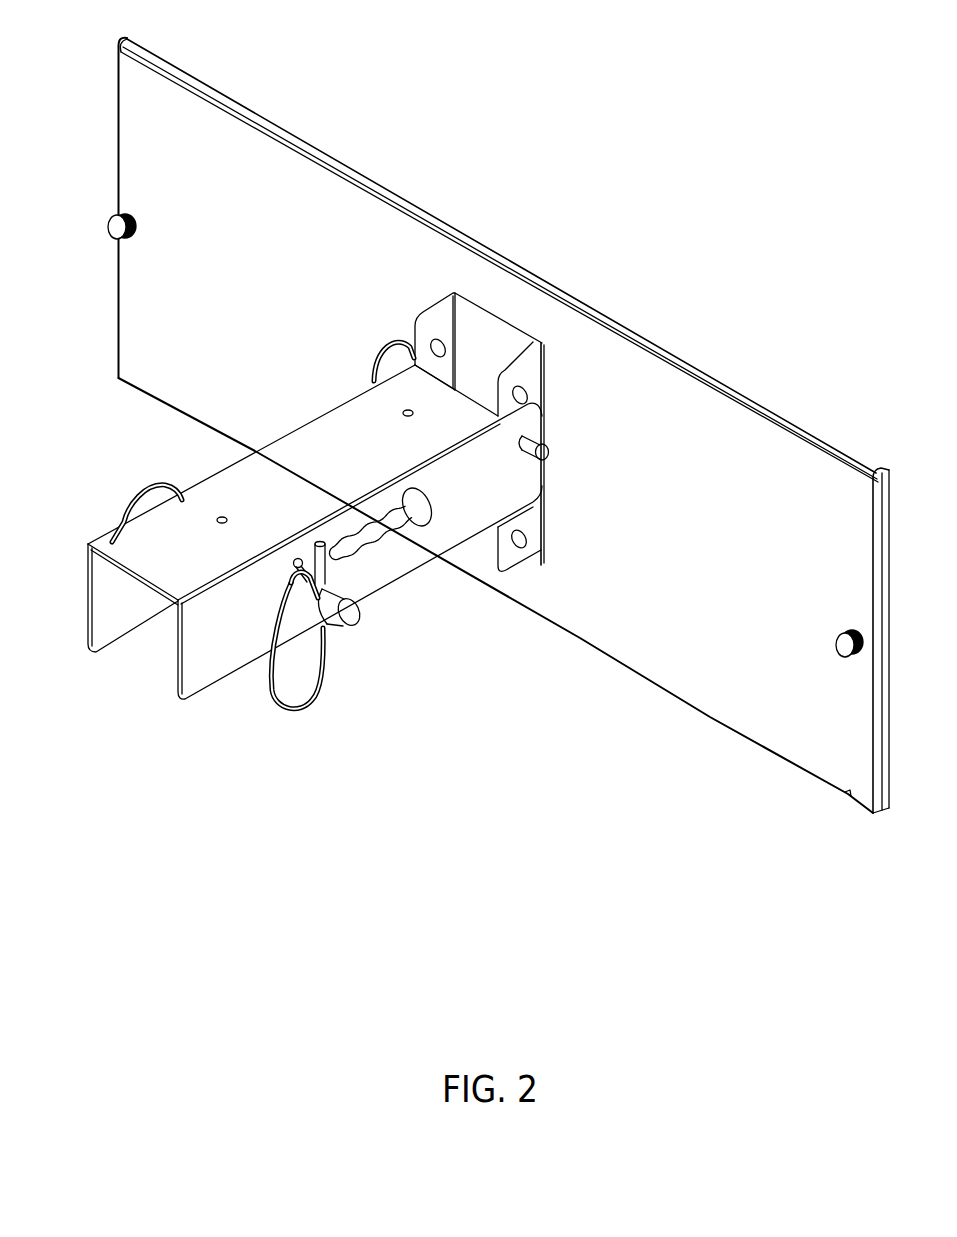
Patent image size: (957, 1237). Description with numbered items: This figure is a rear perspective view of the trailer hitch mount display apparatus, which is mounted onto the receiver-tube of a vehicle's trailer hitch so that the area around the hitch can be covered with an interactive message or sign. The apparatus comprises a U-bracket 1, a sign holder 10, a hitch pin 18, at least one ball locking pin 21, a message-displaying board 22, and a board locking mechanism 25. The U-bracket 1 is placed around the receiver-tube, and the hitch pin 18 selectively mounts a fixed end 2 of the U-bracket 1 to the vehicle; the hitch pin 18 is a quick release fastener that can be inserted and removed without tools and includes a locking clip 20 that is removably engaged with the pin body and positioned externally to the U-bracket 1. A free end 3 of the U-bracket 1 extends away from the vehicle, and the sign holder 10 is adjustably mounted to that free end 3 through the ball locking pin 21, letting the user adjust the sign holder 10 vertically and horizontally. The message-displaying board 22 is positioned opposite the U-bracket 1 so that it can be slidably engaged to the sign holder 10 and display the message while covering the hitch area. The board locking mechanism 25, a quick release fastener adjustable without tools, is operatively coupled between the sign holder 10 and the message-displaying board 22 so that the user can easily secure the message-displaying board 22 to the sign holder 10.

The U-bracket 1 is at (323, 432).
The fixed end 2 is at (107, 535).
The free end 3 is at (543, 483).
The sign holder 10 is at (679, 651).
The hitch pin 18 is at (368, 623).
The locking clip 20 is at (278, 702).
The ball locking pin 21 is at (556, 460).
The message-displaying board 22 is at (712, 374).
The board locking mechanism 25 is at (102, 233).